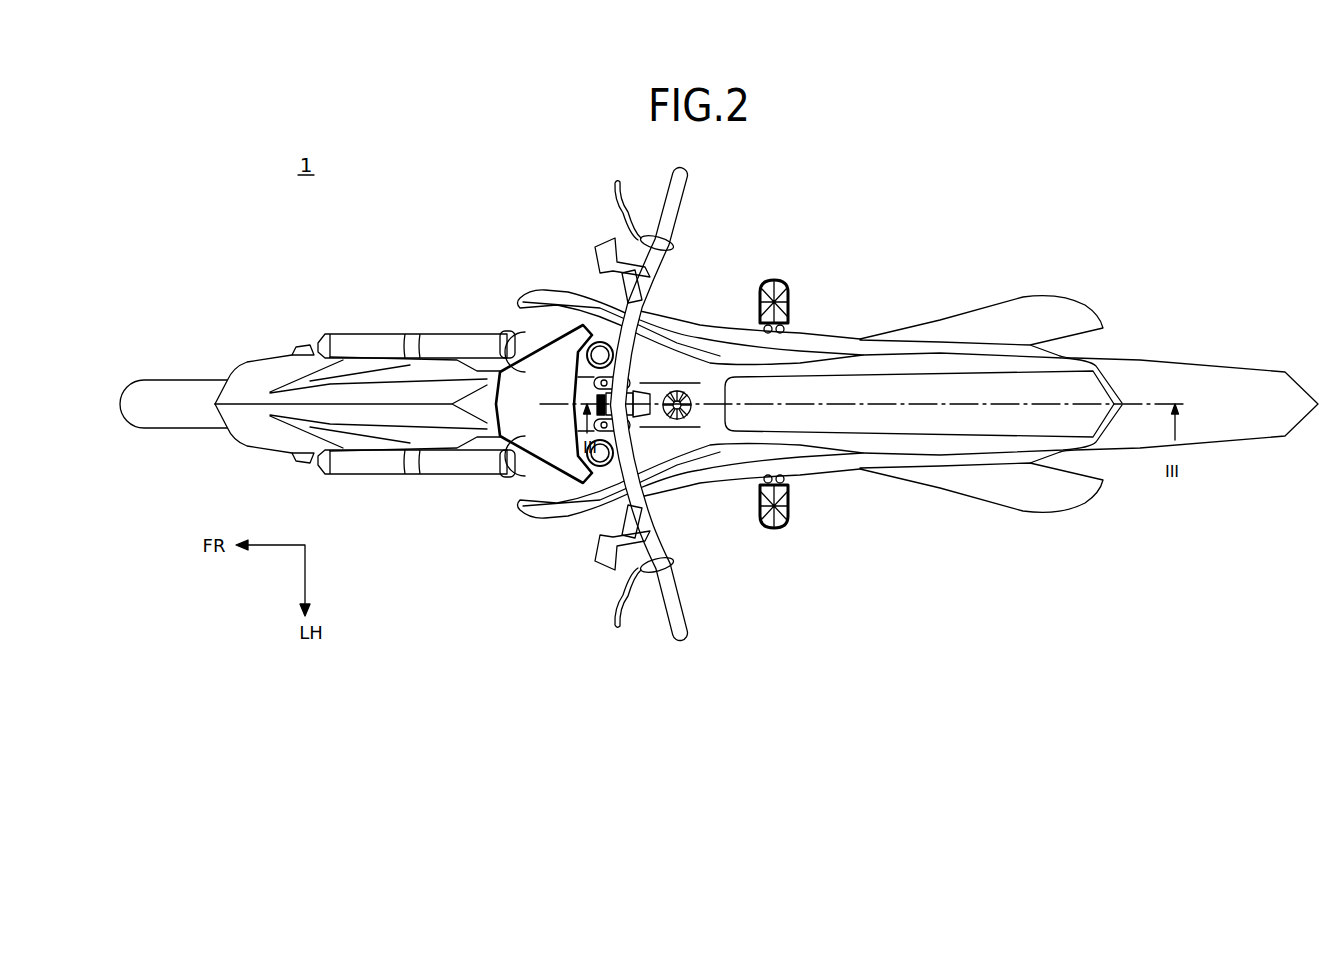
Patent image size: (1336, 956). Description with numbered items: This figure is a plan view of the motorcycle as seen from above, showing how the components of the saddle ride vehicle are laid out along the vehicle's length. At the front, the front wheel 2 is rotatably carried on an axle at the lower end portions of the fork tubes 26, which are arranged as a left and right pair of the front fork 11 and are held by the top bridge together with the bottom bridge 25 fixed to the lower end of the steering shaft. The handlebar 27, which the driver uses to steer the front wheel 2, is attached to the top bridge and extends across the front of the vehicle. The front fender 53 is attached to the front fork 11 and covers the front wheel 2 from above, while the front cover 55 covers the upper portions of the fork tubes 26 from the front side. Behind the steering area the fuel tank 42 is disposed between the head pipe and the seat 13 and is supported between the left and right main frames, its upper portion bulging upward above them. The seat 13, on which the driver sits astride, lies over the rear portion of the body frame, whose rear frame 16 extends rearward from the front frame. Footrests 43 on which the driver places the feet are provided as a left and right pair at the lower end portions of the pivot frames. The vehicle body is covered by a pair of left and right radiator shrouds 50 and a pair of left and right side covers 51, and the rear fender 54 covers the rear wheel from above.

The front wheel 2 is at (156, 380).
The front fork 11 is at (437, 347).
The seat 13 is at (873, 393).
The rear frame 16 is at (848, 482).
The bottom bridge 25 is at (510, 478).
The fork tubes 26 is at (482, 337).
The handlebar 27 is at (657, 515).
The fuel tank 42 is at (667, 378).
The footrests 43 is at (782, 282).
The radiator shrouds 50 is at (580, 292).
The side covers 51 is at (967, 308).
The front fender 53 is at (255, 372).
The rear fender 54 is at (1205, 380).
The front cover 55 is at (532, 387).